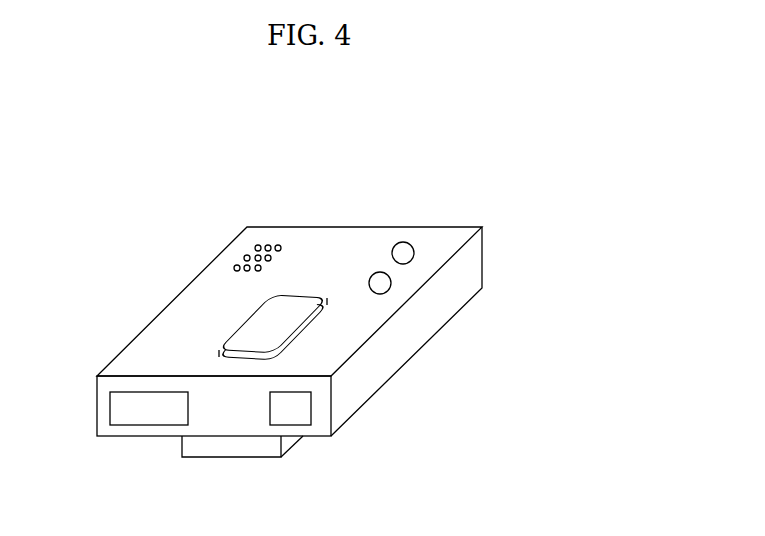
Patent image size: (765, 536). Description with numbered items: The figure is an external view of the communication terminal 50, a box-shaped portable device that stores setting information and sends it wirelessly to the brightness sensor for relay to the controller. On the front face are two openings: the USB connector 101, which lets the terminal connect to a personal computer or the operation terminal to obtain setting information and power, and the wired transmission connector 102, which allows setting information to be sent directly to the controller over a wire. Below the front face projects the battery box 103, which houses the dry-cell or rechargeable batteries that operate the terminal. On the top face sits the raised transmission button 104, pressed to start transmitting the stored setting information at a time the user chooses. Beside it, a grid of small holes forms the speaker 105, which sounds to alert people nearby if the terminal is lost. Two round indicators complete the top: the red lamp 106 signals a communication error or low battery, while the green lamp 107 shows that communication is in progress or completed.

The communication terminal 50 is at (545, 196).
The USB connector 101 is at (110, 405).
The wired transmission connector 102 is at (311, 410).
The battery box 103 is at (205, 458).
The transmission button 104 is at (300, 338).
The speaker 105 is at (246, 255).
The red lamp 106 is at (392, 283).
The green lamp 107 is at (415, 255).